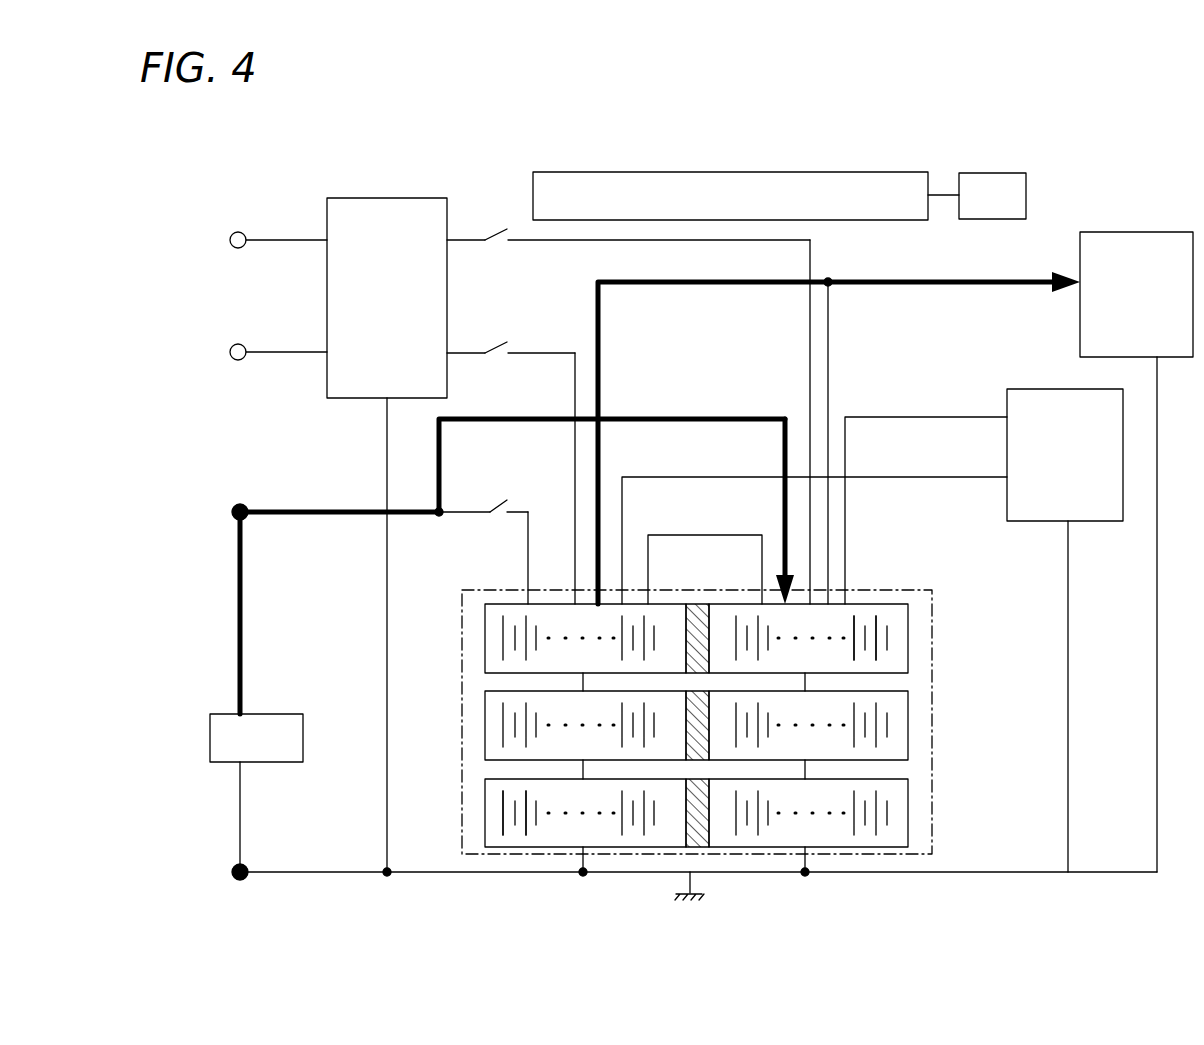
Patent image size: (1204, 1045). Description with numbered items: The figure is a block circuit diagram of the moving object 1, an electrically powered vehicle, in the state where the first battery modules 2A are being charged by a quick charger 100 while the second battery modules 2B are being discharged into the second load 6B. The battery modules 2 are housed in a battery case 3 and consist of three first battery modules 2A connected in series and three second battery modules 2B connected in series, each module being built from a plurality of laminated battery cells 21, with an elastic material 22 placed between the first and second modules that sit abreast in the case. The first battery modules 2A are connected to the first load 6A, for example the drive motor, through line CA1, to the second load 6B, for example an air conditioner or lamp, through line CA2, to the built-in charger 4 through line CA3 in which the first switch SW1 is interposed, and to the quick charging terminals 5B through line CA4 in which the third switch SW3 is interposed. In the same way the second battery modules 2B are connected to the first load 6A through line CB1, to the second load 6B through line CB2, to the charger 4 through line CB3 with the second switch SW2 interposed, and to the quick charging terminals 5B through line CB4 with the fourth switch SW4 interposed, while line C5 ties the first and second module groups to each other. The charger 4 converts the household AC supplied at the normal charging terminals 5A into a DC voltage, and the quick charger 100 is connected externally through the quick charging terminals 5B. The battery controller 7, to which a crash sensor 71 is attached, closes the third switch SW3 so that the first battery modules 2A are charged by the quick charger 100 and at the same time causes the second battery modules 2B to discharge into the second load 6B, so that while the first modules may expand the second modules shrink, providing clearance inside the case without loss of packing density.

The moving object 1 is at (1098, 189).
The battery modules 2 is at (908, 594).
The first battery modules 2A is at (908, 638).
The second battery modules 2B is at (485, 636).
The battery cells 21 is at (858, 616).
The elastic material 22 is at (698, 604).
The battery case 3 is at (909, 874).
The charger 4 is at (390, 198).
The normal charging terminals 5A is at (232, 245).
The quick charging terminals 5B is at (235, 522).
The first load 6A is at (1040, 389).
The second load 6B is at (1140, 232).
The battery controller 7 is at (733, 172).
The sensor 71 is at (993, 173).
The quick charger 100 is at (283, 714).
The first switch SW1 is at (503, 233).
The second switch SW2 is at (503, 345).
The third switch SW3 is at (503, 418).
The fourth switch SW4 is at (503, 501).
The line CA1 is at (923, 416).
The line CA2 is at (830, 338).
The line CA3 is at (813, 268).
The line CA4 is at (735, 419).
The line CB1 is at (907, 476).
The line CB2 is at (627, 286).
The line CB3 is at (520, 352).
The line CB4 is at (528, 559).
The line C5 is at (701, 534).